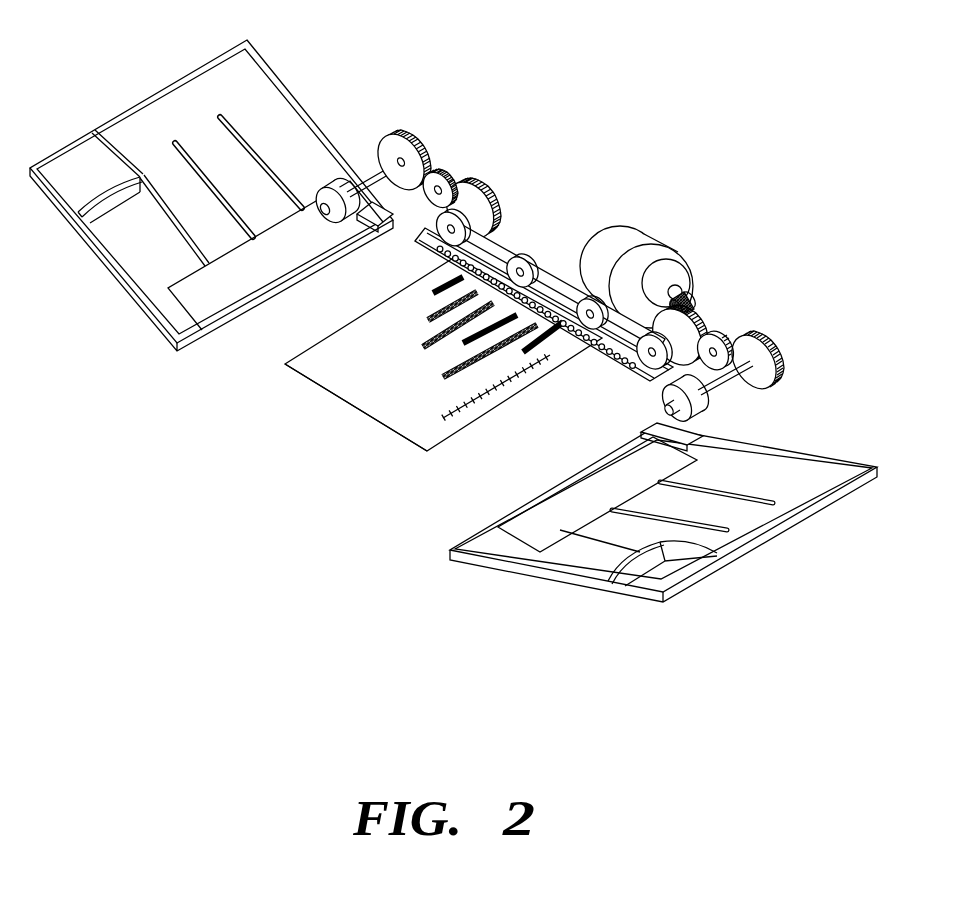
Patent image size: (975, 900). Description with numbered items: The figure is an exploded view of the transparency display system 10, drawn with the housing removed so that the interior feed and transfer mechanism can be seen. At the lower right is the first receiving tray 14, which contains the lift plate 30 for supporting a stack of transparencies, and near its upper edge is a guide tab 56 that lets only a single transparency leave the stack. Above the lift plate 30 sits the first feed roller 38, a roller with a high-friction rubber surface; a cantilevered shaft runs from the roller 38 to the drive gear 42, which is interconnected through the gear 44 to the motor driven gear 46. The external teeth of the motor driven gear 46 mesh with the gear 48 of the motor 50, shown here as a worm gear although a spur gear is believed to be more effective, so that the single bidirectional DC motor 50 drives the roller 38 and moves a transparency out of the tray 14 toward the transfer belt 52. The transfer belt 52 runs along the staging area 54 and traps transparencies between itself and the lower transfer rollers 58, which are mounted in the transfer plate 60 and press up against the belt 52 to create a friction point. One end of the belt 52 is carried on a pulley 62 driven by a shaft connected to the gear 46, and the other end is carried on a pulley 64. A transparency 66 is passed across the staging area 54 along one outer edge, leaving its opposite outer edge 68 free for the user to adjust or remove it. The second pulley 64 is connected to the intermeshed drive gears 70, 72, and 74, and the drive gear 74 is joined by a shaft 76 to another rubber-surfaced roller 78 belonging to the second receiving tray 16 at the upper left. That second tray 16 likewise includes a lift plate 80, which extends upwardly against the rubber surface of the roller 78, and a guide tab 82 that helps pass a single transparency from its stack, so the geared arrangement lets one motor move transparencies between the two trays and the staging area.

The display system 10 is at (815, 568).
The first receiving tray 14 is at (749, 545).
The second receiving tray 16 is at (160, 88).
The lift plate 30 is at (538, 542).
The first feed roller 38 is at (706, 412).
The drive gear 42 is at (760, 390).
The gear 44 is at (714, 340).
The motor driven gear 46 is at (705, 326).
The worm gear 48 is at (693, 297).
The motor 50 is at (614, 242).
The transfer belt 52 is at (547, 268).
The staging area 54 is at (467, 422).
The guide tab 56 is at (690, 442).
The lower transfer rollers 58 is at (590, 368).
The transfer plate 60 is at (650, 384).
The pulley 62 is at (638, 380).
The pulley 64 is at (435, 259).
The transparency 66 is at (322, 362).
The opposite outer edge 68 is at (341, 400).
The drive gear 70 is at (483, 183).
The drive gear 72 is at (447, 168).
The drive gear 74 is at (390, 142).
The shaft 76 is at (370, 180).
The roller 78 is at (330, 188).
The lift plate 80 is at (238, 260).
The guide tab 82 is at (353, 230).